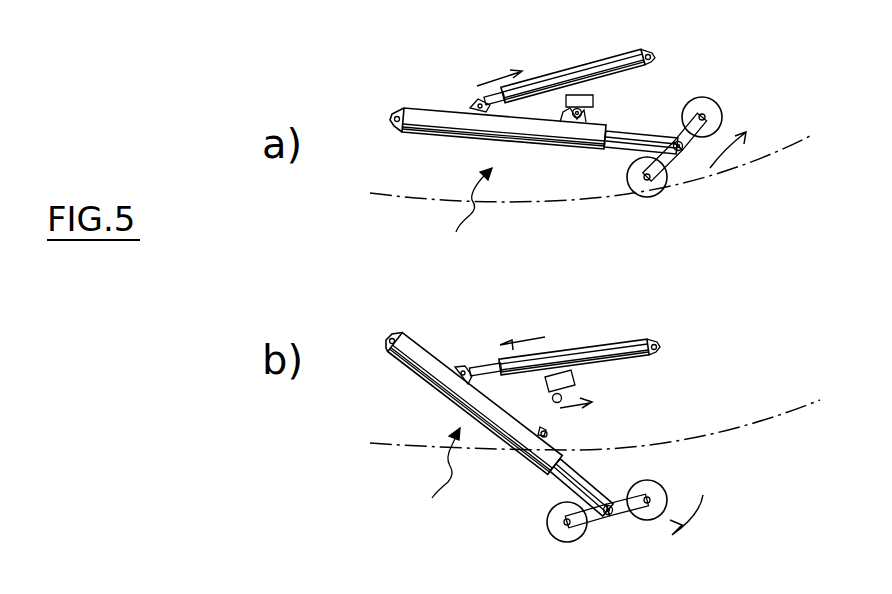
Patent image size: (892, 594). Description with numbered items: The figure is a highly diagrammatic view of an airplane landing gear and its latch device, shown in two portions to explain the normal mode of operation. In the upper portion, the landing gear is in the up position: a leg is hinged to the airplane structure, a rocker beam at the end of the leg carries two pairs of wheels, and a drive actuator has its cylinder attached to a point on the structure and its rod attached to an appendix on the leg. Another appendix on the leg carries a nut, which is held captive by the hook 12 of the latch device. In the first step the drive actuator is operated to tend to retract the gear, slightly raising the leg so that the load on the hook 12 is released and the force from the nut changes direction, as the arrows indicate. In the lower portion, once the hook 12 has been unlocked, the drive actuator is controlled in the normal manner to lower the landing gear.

The hook 12 is at (552, 399).